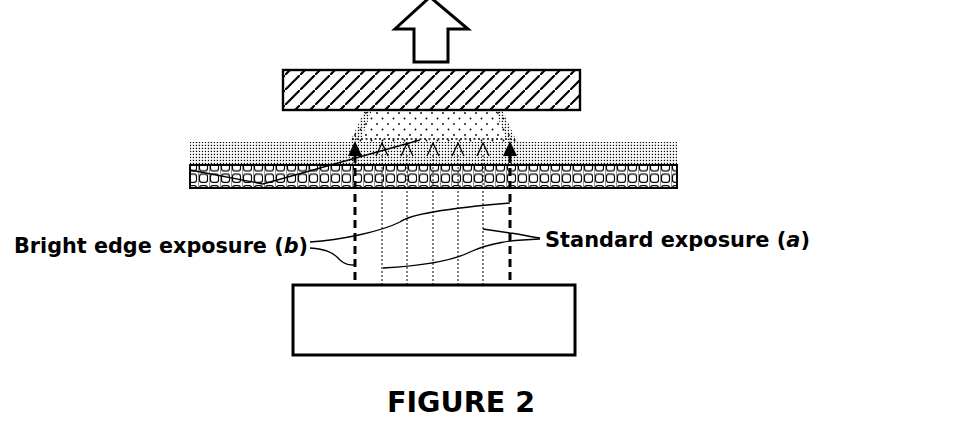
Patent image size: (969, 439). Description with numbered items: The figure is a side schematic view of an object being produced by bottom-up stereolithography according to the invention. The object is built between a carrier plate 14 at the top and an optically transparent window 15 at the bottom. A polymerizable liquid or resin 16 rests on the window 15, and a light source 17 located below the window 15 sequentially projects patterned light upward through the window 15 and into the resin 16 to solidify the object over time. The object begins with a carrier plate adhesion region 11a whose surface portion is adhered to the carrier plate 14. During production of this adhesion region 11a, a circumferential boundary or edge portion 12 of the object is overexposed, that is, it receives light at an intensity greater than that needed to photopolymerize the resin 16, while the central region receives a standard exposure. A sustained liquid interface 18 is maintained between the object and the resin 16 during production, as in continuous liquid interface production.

The carrier plate 14 is at (325, 80).
The circumferential edge portion 12 is at (350, 128).
The carrier plate adhesion region 11a is at (433, 126).
The polymerizable liquid or resin 16 is at (635, 152).
The window 15 is at (662, 178).
The sustained liquid interface 18 is at (188, 168).
The light source 17 is at (434, 320).